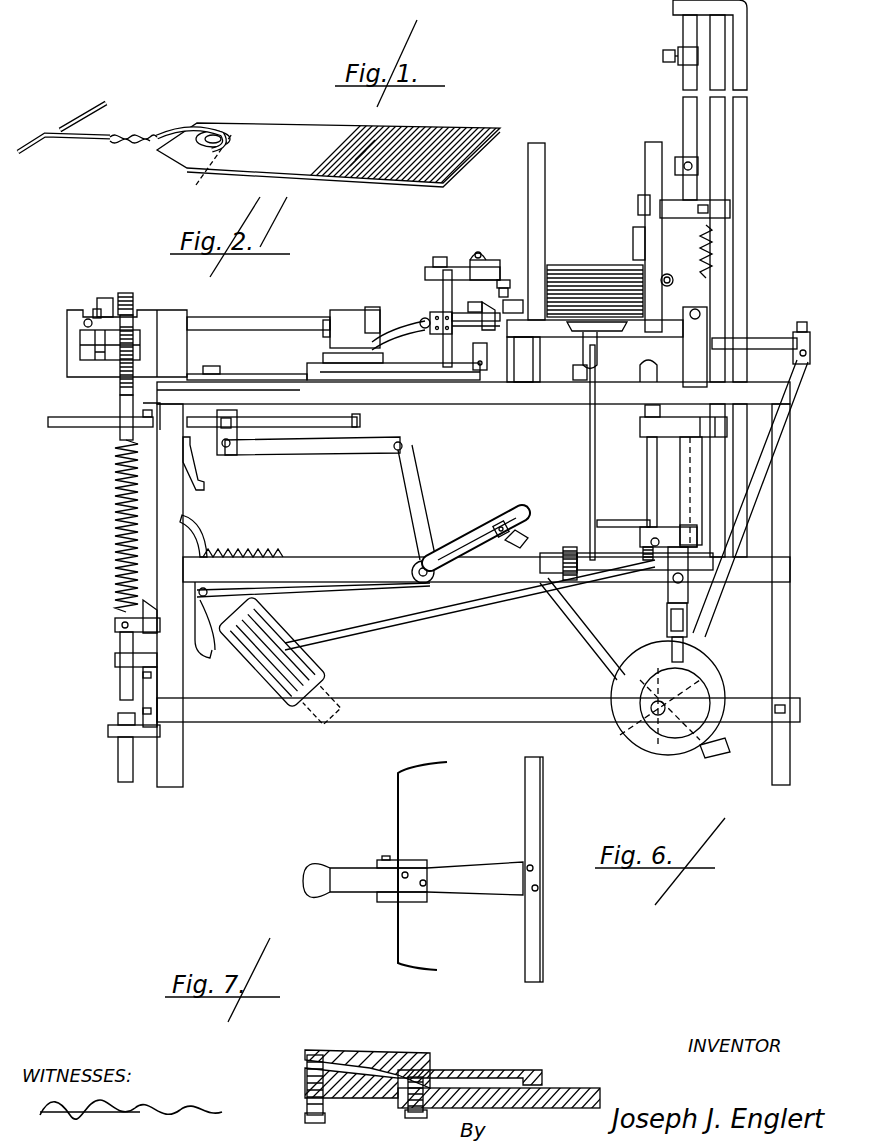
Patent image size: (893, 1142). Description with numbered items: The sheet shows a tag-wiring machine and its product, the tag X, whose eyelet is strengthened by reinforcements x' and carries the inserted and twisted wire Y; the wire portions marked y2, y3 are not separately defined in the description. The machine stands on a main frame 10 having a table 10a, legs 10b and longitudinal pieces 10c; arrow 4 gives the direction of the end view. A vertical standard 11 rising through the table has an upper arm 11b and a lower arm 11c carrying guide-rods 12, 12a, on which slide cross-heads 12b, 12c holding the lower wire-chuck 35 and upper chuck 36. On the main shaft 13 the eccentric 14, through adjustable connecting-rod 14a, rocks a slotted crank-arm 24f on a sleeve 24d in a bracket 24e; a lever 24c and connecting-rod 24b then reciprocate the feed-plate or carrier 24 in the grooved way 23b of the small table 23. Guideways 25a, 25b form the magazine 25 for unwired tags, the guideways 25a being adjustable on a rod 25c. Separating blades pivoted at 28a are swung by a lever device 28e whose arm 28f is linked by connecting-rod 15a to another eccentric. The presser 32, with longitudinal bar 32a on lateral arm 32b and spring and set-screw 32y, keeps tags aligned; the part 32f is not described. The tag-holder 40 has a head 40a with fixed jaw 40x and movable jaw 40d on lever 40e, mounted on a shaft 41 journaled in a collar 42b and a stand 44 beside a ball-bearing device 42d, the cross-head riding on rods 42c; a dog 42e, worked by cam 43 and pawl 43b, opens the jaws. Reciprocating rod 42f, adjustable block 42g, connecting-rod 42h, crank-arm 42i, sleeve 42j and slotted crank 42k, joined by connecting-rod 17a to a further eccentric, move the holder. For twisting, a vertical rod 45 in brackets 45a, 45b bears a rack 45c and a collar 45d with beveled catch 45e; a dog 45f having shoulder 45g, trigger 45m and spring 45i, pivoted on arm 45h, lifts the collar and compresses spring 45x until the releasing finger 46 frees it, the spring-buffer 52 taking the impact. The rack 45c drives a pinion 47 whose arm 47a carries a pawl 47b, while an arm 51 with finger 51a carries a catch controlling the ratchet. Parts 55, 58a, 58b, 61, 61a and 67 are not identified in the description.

In FIG. 2, the arrow 4 is at (58, 481).
In FIG. 2, the main frame 10 is at (493, 584).
In FIG. 2, the table 10a is at (505, 390).
In FIG. 2, the legs 10b is at (790, 500).
In FIG. 2, the longitudinal pieces 10c is at (466, 583).
In FIG. 2, the vertical standard 11 is at (732, 304).
In FIG. 2, the upper extension or arm 11b is at (652, 528).
In FIG. 2, the lower extension or arm 11c is at (744, 596).
In FIG. 2, the vertical guide-rod 12 is at (686, 73).
In FIG. 2, the vertical guide-rod 12a is at (671, 28).
In FIG. 2, the sliding cross-head or chuck-support 12b is at (640, 427).
In FIG. 2, the sliding cross-head or chuck-support 12c is at (638, 203).
In FIG. 2, the main shaft 13 is at (636, 737).
In FIG. 2, the eccentric 14 is at (688, 737).
In FIG. 2, the adjustable connecting-rod 14a is at (704, 625).
In FIG. 2, the connecting-rod 15a is at (803, 429).
In FIG. 2, the connecting-rod 17a is at (595, 622).
In FIG. 2, the small table 23 is at (535, 335).
In FIG. 2, the grooved way 23b is at (563, 325).
In FIG. 2, the feed-plate or carrier 24 is at (605, 320).
In FIG. 2, the connecting-rod 24b is at (598, 347).
In FIG. 2, the lever 24c is at (569, 464).
In FIG. 2, the sleeve 24d is at (574, 592).
In FIG. 2, the bracket 24e is at (556, 598).
In FIG. 2, the slotted crank-arm 24f is at (635, 540).
In FIG. 2, the magazine or chute 25 is at (572, 280).
In FIG. 2, the guideways 25a is at (652, 142).
In FIG. 2, the guideways 25b is at (541, 143).
In FIG. 2, the rod 25c is at (785, 258).
In FIG. 2, the pivot 28a is at (707, 308).
In FIG. 2, the tilting bracket and lever device 28e is at (766, 315).
In FIG. 2, the arm 28f is at (802, 366).
In FIG. 6, the presser 32 is at (537, 775).
In FIG. 7, the presser 32 is at (546, 1070).
In FIG. 2, the longitudinal bar 32a is at (473, 302).
In FIG. 6, the longitudinal bar 32a is at (538, 825).
In FIG. 7, the longitudinal bar 32a is at (531, 1070).
In FIG. 6, the lateral arm 32b is at (422, 866).
In FIG. 7, the lateral arm 32b is at (420, 1052).
In FIG. 6, the gripper clamp 32f is at (380, 858).
In FIG. 7, the gripper clamp 32f is at (387, 1052).
In FIG. 7, the spring and set-screw 32y is at (310, 1063).
In FIG. 2, the lower wire-chuck 35 is at (642, 371).
In FIG. 2, the upper chuck 36 is at (636, 233).
In FIG. 2, the tag-holder 40 is at (390, 320).
In FIG. 2, the head 40a is at (398, 320).
In FIG. 2, the movable jaw 40d is at (448, 394).
In FIG. 2, the lever 40e is at (350, 384).
In FIG. 2, the fixed jaw 40x is at (445, 275).
In FIG. 2, the shaft 41 is at (238, 318).
In FIG. 2, the collar or box 42b is at (350, 310).
In FIG. 2, the rods 42c is at (262, 374).
In FIG. 2, the ball-bearing device 42d is at (328, 312).
In FIG. 2, the finger or dog 42e is at (312, 372).
In FIG. 2, the reciprocating rod 42f is at (290, 428).
In FIG. 2, the adjustable block 42g is at (236, 450).
In FIG. 2, the connecting-rod 42h is at (357, 454).
In FIG. 2, the crank-arm 42i is at (412, 484).
In FIG. 2, the sleeve 42j is at (376, 599).
In FIG. 2, the slotted crank 42k is at (470, 545).
In FIG. 2, the cam 43 is at (316, 458).
In FIG. 2, the pawl or pivot-cam 43b is at (482, 370).
In FIG. 2, the bracket or small stand 44 is at (150, 313).
In FIG. 2, the vertical rod 45 is at (118, 637).
In FIG. 2, the bracket 45a is at (112, 432).
In FIG. 2, the bracket 45b is at (115, 656).
In FIG. 2, the rack 45c is at (141, 269).
In FIG. 2, the collar or block 45d is at (115, 623).
In FIG. 2, the beveled catch or projection 45e is at (140, 606).
In FIG. 2, the pivoted dog 45f is at (202, 535).
In FIG. 2, the shoulder 45g is at (196, 636).
In FIG. 2, the arm 45h is at (303, 586).
In FIG. 2, the spring 45i is at (260, 555).
In FIG. 2, the trigger 45m is at (223, 503).
In FIG. 2, the spring 45x is at (115, 521).
In FIG. 2, the fixed finger or releasing device 46 is at (196, 462).
In FIG. 2, the pinion 47 is at (132, 298).
In FIG. 2, the arm 47a is at (105, 298).
In FIG. 2, the pawl 47b is at (97, 308).
In FIG. 2, the arm 51 is at (80, 342).
In FIG. 2, the finger 51a is at (182, 339).
In FIG. 2, the spring-buffer 52 is at (110, 716).
In FIG. 2, the string guide 55 is at (489, 262).
In FIG. 2, the cutter 58a is at (467, 215).
In FIG. 2, the cutter 58b is at (493, 215).
In FIG. 2, the string clamp 61 is at (506, 285).
In FIG. 2, the clamp arm 61a is at (517, 239).
In FIG. 2, the cutter bar 67 is at (445, 265).
In FIG. 1, the tag X is at (215, 129).
In FIG. 1, the reinforcements x' is at (229, 144).
In FIG. 1, the wire Y is at (148, 133).
In FIG. 2, the wire Y is at (305, 668).
In FIG. 1, the string twist y2 is at (120, 158).
In FIG. 1, the string ends y3 is at (68, 130).